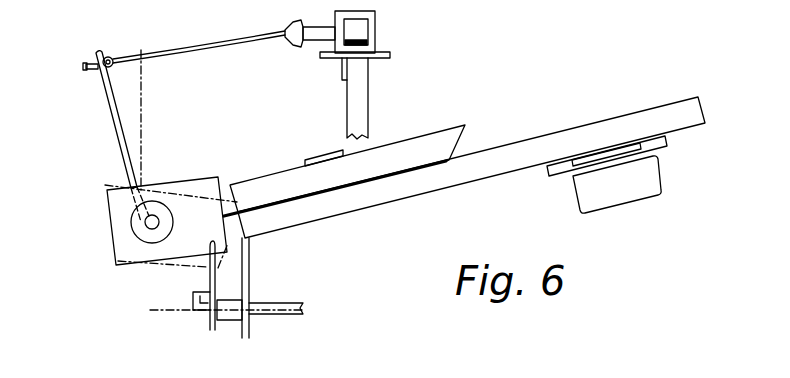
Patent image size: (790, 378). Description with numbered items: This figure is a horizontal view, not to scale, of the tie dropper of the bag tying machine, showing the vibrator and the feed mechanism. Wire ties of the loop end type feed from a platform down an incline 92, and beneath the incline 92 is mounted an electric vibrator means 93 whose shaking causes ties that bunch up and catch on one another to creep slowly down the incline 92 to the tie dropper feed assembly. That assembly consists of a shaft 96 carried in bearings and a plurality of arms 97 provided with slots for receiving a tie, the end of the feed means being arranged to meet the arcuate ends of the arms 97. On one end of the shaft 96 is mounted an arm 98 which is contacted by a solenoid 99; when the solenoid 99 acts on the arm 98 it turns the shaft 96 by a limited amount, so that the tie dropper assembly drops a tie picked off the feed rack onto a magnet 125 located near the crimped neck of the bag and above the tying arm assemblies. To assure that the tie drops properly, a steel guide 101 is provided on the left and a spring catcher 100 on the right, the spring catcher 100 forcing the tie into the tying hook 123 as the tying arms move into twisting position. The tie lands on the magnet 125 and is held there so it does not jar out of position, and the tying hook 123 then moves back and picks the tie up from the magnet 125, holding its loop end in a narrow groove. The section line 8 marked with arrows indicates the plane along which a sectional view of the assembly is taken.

The section line 8- 8 is at (292, 248).
The incline 92 is at (623, 118).
The vibrator means 93 is at (656, 174).
The shaft 96 is at (152, 222).
The arms 97 is at (187, 257).
The arm 98 is at (100, 97).
The solenoid 99 is at (376, 20).
The spring catcher 100 is at (250, 324).
The steel guide 101 is at (212, 328).
The tying hook 123 is at (280, 304).
The magnet 125 is at (232, 320).